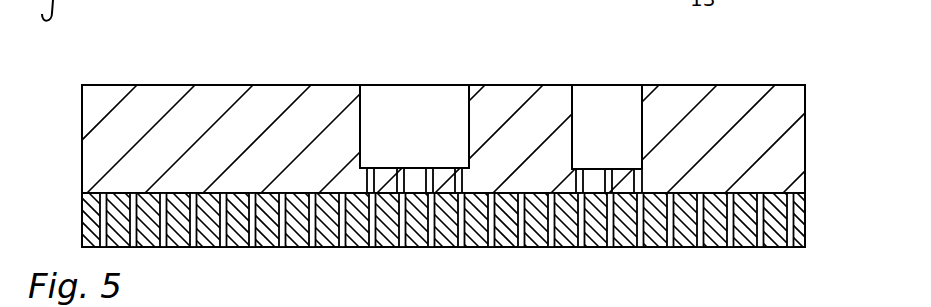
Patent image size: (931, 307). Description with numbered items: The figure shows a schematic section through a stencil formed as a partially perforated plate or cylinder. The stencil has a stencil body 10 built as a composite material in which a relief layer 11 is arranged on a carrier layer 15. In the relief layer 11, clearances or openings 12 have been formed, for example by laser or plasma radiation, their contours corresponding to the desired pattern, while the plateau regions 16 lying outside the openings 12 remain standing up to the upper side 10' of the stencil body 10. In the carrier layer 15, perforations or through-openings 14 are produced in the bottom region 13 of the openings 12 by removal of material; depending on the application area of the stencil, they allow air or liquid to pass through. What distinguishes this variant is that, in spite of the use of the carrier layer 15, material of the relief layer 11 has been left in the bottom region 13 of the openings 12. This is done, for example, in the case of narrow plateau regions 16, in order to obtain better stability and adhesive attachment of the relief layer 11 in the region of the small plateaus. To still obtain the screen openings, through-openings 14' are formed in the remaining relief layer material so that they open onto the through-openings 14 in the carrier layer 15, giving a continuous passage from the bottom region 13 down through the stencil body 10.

The stencil body 10 is at (445, 106).
The upper side 10' is at (320, 45).
The relief layer 11 is at (714, 107).
The openings 12 is at (416, 122).
The bottom region 13 is at (447, 163).
The through-openings 14 is at (447, 250).
The through-openings in the relief layer 14' is at (504, 105).
The carrier layer 15 is at (708, 222).
The plateau regions 16 is at (135, 83).